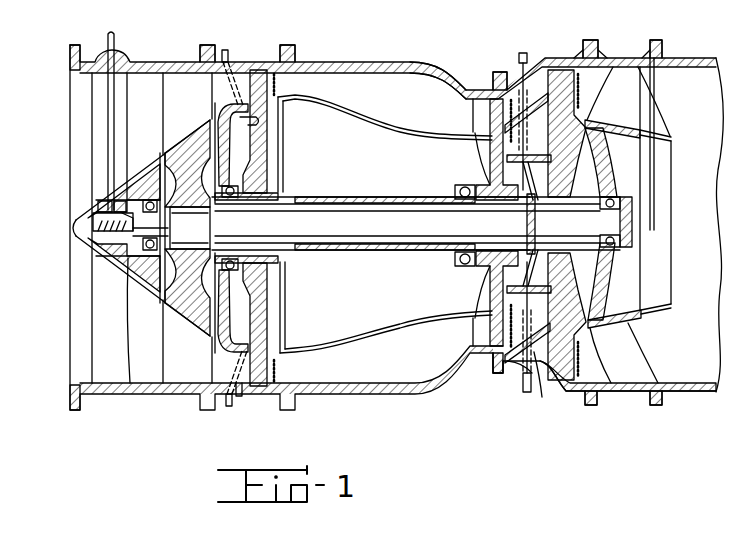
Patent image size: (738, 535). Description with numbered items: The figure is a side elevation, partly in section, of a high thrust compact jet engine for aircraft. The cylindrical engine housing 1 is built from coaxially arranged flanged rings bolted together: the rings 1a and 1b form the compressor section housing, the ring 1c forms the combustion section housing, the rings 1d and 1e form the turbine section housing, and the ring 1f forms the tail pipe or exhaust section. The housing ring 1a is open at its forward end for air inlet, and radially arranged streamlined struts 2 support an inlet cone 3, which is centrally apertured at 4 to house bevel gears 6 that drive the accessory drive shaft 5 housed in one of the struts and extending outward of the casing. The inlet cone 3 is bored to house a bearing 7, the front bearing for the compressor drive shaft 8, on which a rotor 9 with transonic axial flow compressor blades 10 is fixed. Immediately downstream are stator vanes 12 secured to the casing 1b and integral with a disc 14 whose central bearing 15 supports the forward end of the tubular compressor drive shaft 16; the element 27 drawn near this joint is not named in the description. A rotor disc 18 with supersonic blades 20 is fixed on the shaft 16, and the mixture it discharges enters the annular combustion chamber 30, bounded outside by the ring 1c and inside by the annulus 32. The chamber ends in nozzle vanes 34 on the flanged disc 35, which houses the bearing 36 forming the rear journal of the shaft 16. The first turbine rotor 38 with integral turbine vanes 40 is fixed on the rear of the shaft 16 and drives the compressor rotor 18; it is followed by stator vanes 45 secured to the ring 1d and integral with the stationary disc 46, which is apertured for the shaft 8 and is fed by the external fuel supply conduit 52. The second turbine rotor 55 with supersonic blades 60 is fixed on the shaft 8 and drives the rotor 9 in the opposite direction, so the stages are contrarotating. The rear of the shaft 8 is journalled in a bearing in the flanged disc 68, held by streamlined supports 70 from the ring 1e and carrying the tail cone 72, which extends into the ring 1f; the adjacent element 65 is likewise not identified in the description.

The engine housing 1 is at (382, 46).
The housing ring 1a is at (181, 62).
The housing ring 1b is at (265, 62).
The housing ring 1c is at (434, 68).
The housing ring 1d is at (552, 56).
The housing ring 1e is at (605, 58).
The housing ring 1f is at (690, 58).
The streamlined struts 2 is at (92, 116).
The inlet cone 3 is at (100, 254).
The central aperture 4 is at (100, 237).
The accessory drive shaft 5 is at (116, 38).
The bevel gears 6 is at (80, 226).
The bearing 7 is at (168, 236).
The compressor drive shaft 8 is at (242, 226).
The rotor 9 is at (163, 154).
The axial flow compressor blades 10 is at (186, 108).
The stator vanes 12 is at (239, 392).
The disc 14 is at (230, 160).
The central bearing 15 is at (234, 186).
The tubular compressor drive shaft 16 is at (316, 250).
The rotor disc 18 is at (268, 298).
The supersonic blades 20 is at (266, 386).
The bolt 27 is at (225, 48).
The annular combustion chamber 30 is at (404, 100).
The annulus 32 is at (370, 122).
The nozzle vanes 34 is at (472, 118).
The flanged disc 35 is at (478, 290).
The bearing 36 is at (456, 190).
The turbine rotor 38 is at (502, 200).
The turbine vanes 40 is at (488, 362).
The stator vanes 45 is at (544, 388).
The stationary disc 46 is at (536, 280).
The external fuel supply conduit 52 is at (520, 58).
The rotor 55 is at (578, 166).
The supersonic type blades 60 is at (582, 110).
The bearing housing 65 is at (608, 248).
The flanged disc 68 is at (612, 176).
The streamlined supports 70 is at (630, 100).
The tail cone 72 is at (666, 136).